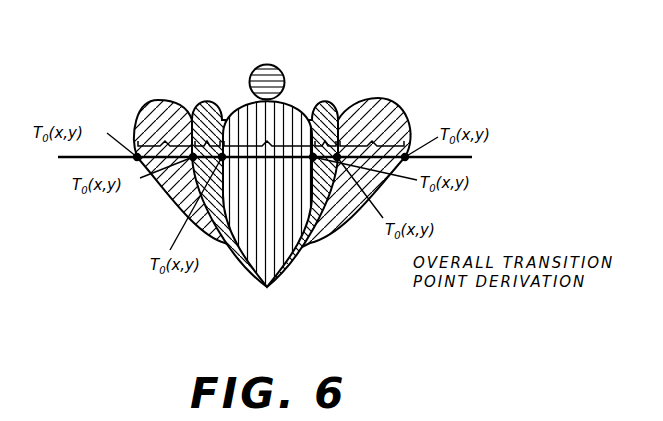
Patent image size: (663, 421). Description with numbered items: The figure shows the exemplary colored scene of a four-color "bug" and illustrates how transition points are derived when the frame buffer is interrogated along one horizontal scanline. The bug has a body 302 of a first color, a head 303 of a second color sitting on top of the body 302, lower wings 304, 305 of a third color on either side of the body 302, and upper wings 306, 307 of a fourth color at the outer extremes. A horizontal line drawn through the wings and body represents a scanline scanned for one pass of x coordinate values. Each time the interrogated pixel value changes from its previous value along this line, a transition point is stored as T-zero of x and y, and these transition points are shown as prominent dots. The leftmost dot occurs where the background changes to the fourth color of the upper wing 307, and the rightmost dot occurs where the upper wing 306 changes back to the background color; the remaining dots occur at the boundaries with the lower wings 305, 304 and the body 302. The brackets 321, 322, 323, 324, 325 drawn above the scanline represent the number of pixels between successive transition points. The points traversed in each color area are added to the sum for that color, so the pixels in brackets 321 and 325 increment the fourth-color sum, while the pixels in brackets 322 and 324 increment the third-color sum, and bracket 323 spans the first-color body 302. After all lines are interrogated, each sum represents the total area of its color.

The body 302 is at (280, 112).
The head 303 is at (274, 67).
The lower wing 304 is at (327, 105).
The lower wing 305 is at (207, 108).
The upper wing 306 is at (393, 113).
The upper wing 307 is at (152, 110).
The bracket 321 is at (165, 144).
The bracket 322 is at (210, 145).
The bracket 323 is at (270, 144).
The bracket 324 is at (328, 145).
The bracket 325 is at (374, 143).